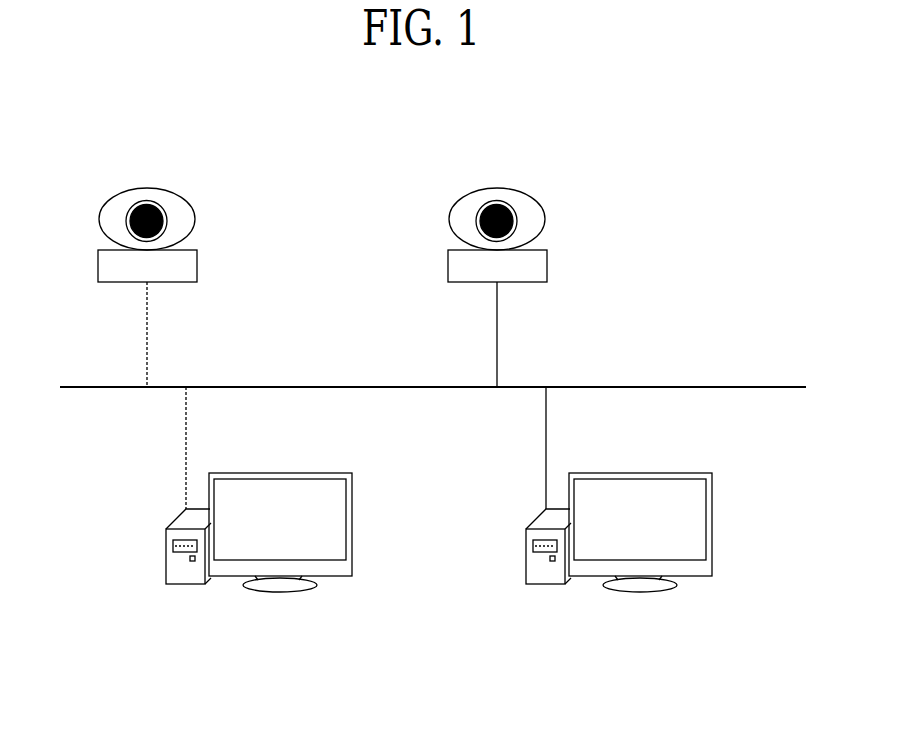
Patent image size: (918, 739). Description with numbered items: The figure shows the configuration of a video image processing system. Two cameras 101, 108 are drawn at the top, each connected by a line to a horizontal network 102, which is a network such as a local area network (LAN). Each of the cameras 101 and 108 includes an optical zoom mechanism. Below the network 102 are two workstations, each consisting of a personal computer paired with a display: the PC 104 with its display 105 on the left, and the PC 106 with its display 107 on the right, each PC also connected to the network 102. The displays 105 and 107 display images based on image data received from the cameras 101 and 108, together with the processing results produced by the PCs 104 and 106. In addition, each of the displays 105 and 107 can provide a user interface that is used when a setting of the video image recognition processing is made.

The camera 101 is at (175, 194).
The network 102 is at (653, 386).
The personal computer 104 is at (165, 542).
The display 105 is at (353, 545).
The personal computer 106 is at (525, 552).
The display 107 is at (712, 552).
The camera 108 is at (525, 194).